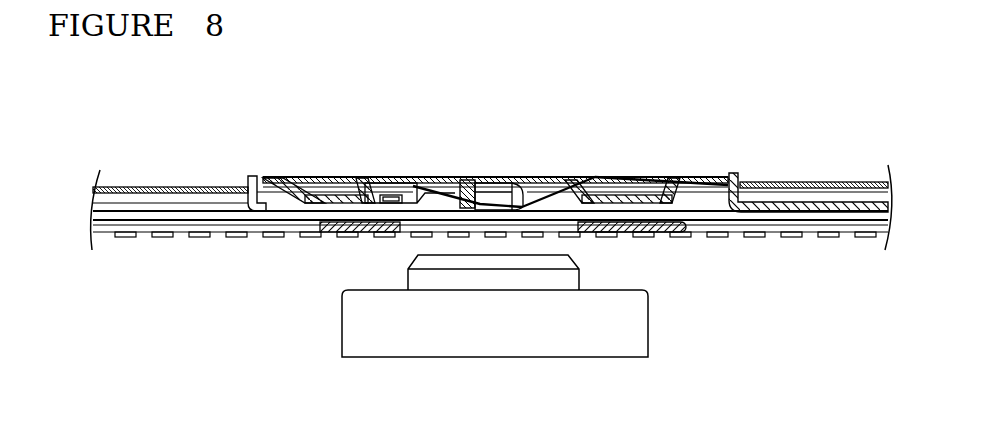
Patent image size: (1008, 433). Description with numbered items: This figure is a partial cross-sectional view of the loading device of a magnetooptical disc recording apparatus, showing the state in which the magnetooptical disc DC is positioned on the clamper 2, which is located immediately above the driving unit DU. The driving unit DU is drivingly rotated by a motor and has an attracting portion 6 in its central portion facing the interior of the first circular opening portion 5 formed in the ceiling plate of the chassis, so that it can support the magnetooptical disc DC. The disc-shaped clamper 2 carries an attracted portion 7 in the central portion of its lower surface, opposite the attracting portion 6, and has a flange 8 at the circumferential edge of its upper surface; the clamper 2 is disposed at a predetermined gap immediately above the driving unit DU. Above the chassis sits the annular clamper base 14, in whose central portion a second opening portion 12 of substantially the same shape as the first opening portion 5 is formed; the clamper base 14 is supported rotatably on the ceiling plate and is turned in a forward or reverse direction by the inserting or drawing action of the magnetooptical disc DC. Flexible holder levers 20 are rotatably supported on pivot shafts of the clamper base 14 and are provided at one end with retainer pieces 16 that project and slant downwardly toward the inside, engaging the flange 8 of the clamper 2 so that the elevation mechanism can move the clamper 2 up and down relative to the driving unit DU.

The clamper 2 is at (522, 177).
The first circular opening portion 5 is at (727, 173).
The attracting portion 6 is at (568, 262).
The attracted portion 7 is at (477, 211).
The flange 8 is at (287, 177).
The second opening portion 12 is at (242, 177).
The clamper base 14 is at (798, 182).
The retainer piece 16 is at (453, 177).
The holder lever 20 is at (656, 162).
The driving unit DU is at (635, 322).
The magnetooptical disc DC is at (766, 225).